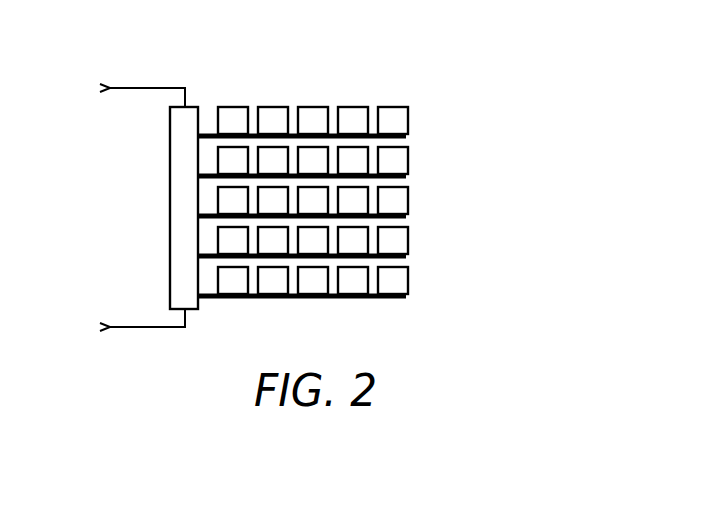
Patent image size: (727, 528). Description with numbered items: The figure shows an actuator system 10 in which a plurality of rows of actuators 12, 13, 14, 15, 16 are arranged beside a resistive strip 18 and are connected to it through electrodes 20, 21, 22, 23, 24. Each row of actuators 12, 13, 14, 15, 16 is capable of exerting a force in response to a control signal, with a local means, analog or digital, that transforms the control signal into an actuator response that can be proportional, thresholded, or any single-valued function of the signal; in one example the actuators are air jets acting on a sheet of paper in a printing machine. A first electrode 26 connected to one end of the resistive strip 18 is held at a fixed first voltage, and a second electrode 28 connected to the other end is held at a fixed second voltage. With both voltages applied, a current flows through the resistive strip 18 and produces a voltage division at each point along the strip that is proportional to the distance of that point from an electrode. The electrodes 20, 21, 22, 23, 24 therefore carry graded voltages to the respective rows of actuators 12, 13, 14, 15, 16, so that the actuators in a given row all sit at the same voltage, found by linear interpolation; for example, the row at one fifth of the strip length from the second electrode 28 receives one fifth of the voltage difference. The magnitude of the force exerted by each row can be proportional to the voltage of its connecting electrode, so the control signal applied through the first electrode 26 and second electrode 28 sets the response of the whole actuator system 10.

The actuator system 10 is at (481, 112).
The row of actuators 12 is at (421, 119).
The row of actuators 13 is at (414, 153).
The row of actuators 14 is at (421, 203).
The row of actuators 15 is at (421, 247).
The row of actuators 16 is at (421, 284).
The resistive strip 18 is at (175, 197).
The electrode 20 is at (368, 134).
The electrode 21 is at (403, 178).
The electrode 22 is at (403, 218).
The electrode 23 is at (403, 258).
The electrode 24 is at (372, 298).
The first electrode 26 is at (158, 92).
The second electrode 28 is at (158, 325).